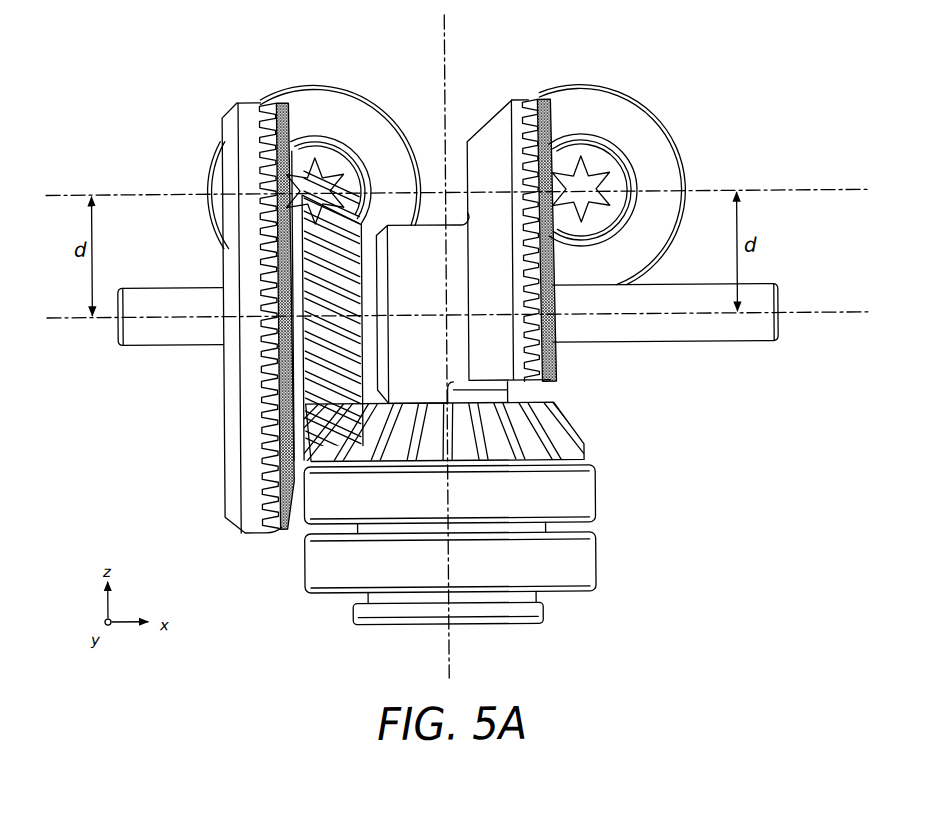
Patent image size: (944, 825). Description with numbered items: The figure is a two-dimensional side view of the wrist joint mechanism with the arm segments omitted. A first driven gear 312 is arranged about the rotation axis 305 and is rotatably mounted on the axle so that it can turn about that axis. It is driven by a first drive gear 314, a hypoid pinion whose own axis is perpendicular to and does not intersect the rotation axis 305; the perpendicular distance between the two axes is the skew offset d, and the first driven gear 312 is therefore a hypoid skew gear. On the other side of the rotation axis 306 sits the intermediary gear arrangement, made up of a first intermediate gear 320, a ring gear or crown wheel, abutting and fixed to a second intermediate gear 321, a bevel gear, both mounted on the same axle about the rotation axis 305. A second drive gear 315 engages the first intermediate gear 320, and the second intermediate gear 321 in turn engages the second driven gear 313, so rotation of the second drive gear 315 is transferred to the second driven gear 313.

The rotation axis 305 is at (822, 315).
The rotation axis 306 is at (446, 20).
The first driven gear 312 is at (492, 130).
The second driven gear 313 is at (559, 413).
The first drive gear 314 is at (586, 189).
The second drive gear 315 is at (320, 146).
The first intermediate gear 320 is at (233, 466).
The second intermediate gear 321 is at (274, 418).